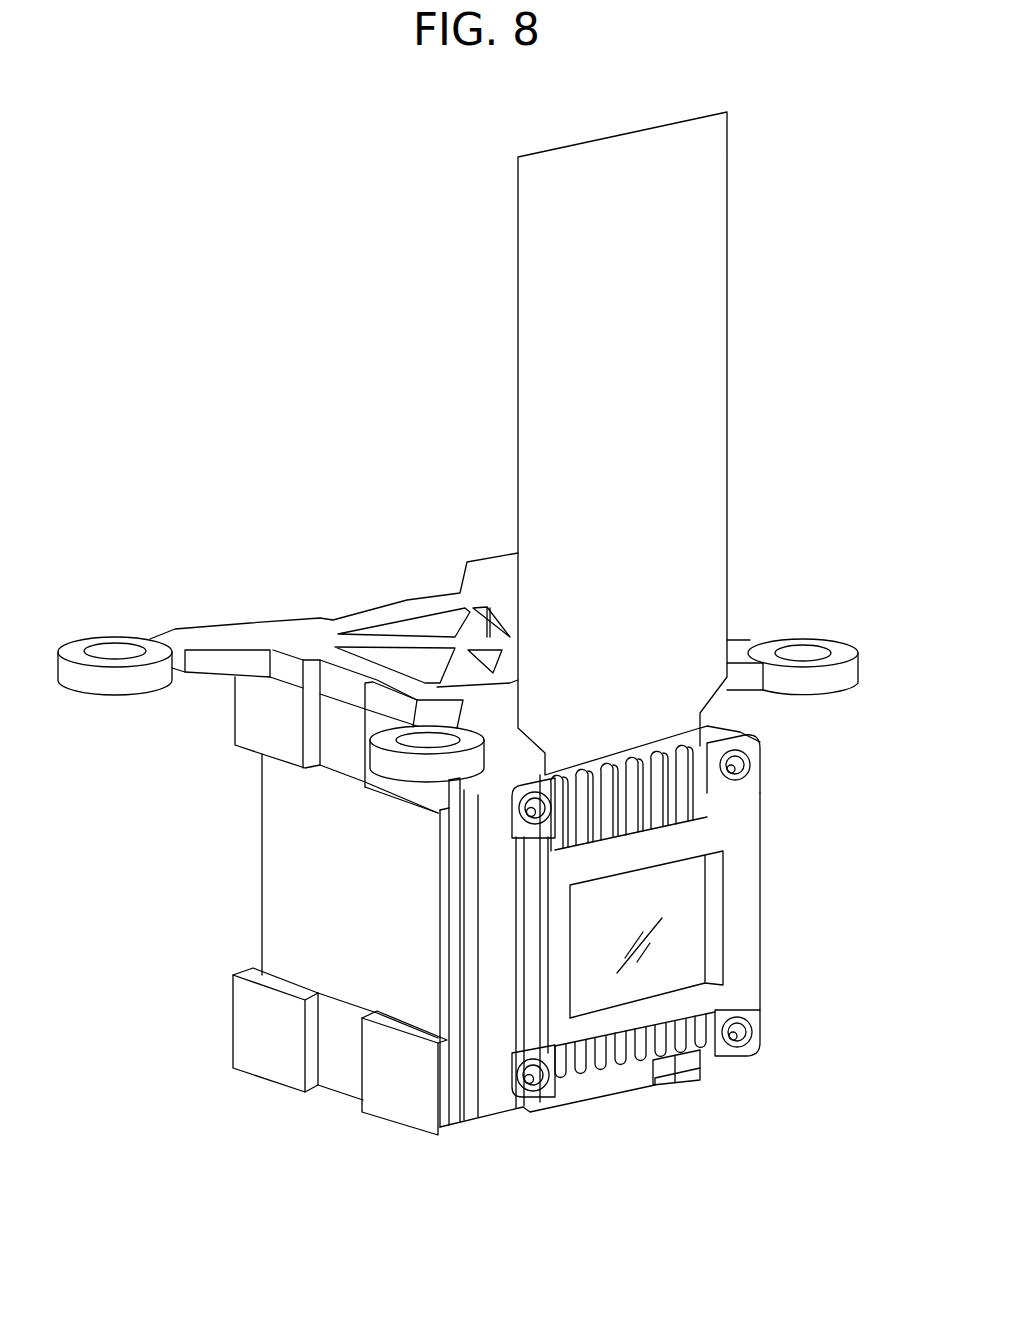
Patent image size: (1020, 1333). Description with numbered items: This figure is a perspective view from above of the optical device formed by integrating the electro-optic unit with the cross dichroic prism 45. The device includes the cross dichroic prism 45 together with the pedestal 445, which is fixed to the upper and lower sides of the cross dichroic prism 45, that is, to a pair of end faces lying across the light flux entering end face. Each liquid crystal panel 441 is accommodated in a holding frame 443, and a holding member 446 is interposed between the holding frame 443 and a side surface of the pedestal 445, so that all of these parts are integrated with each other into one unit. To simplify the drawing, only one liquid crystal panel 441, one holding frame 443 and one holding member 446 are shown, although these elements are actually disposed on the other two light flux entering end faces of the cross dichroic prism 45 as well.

The cross dichroic prism 45 is at (275, 850).
The pedestal 445 is at (233, 720).
The holding member 446 is at (478, 1110).
The holding frame 443 is at (740, 840).
The liquid crystal panel 441 is at (668, 973).